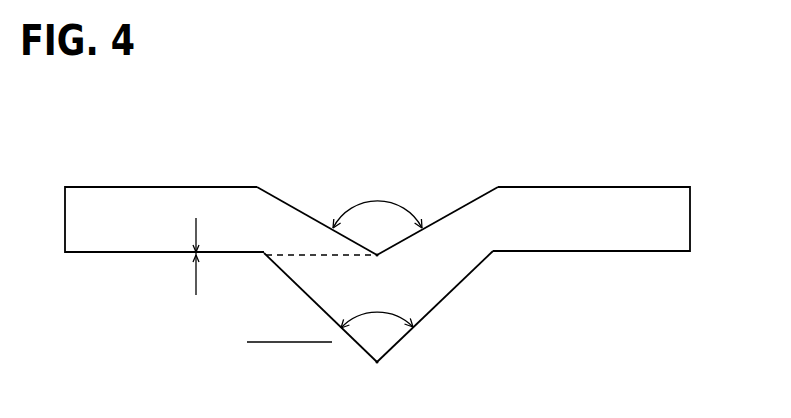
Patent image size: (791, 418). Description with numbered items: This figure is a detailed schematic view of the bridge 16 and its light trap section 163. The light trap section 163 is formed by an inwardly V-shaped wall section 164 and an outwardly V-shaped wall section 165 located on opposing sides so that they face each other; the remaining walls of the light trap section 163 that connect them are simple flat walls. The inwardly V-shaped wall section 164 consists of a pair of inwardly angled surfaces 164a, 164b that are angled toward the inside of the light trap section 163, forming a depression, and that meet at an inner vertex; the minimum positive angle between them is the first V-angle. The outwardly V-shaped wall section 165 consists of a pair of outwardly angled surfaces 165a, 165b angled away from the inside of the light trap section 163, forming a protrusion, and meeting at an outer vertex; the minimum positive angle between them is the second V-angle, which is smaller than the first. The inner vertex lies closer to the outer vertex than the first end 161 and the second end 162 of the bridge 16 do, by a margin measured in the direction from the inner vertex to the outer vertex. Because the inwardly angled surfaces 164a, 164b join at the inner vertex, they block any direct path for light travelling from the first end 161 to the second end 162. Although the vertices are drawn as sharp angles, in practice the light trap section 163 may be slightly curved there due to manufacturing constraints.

The bridge 16 is at (712, 120).
The first end 161 is at (102, 187).
The second end 162 is at (660, 186).
The light trap section 163 is at (392, 350).
The inwardly V-shaped wall section 164 is at (371, 192).
The inwardly angled surface 164a is at (305, 213).
The inwardly angled surface 164b is at (457, 210).
The outwardly V-shaped wall section 165 is at (357, 306).
The outwardly angled surface 165a is at (296, 288).
The outwardly angled surface 165b is at (457, 290).